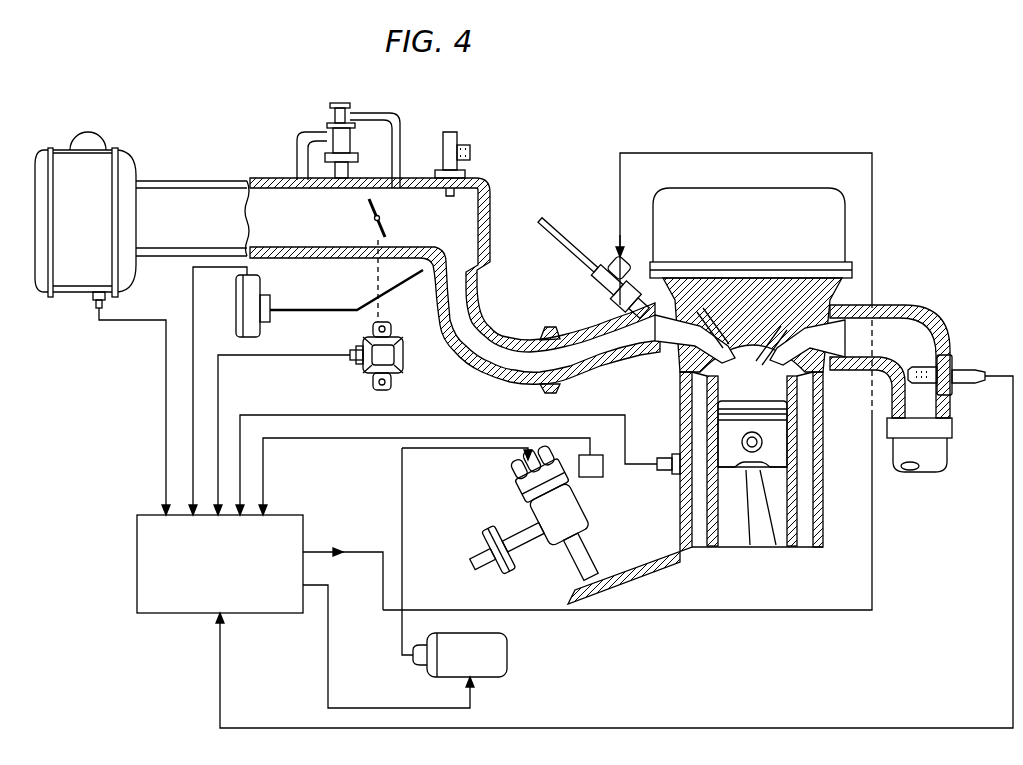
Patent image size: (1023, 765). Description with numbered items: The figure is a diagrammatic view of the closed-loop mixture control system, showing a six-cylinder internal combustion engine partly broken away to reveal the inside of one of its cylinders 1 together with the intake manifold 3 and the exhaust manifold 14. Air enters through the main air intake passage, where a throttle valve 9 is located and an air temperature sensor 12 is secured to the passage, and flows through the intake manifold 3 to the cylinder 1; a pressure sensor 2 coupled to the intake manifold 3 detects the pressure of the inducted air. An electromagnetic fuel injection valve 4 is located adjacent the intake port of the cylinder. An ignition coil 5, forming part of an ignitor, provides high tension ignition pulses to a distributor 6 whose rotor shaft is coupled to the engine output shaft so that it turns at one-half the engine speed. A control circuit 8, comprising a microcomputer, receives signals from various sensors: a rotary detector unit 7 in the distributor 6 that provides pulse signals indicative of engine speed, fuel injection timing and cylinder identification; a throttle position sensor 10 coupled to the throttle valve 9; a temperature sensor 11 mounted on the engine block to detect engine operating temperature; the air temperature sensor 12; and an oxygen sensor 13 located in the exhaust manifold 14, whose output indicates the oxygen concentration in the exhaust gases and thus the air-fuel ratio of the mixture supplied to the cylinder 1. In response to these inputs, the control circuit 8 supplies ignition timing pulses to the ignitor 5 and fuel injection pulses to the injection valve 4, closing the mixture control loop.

The cylinder 1 is at (680, 414).
The pressure sensor 2 is at (258, 325).
The intake manifold 3 is at (487, 187).
The electromagnetic fuel injection valve 4 is at (612, 256).
The ignition coil 5 is at (503, 657).
The distributor 6 is at (580, 527).
The rotary detector unit 7 is at (594, 478).
The control circuit 8 is at (137, 566).
The throttle valve 9 is at (387, 216).
The throttle position sensor 10 is at (403, 351).
The temperature sensor 11 is at (667, 476).
The air temperature sensor 12 is at (95, 305).
The oxygen sensor 13 is at (967, 365).
The exhaust manifold 14 is at (922, 320).